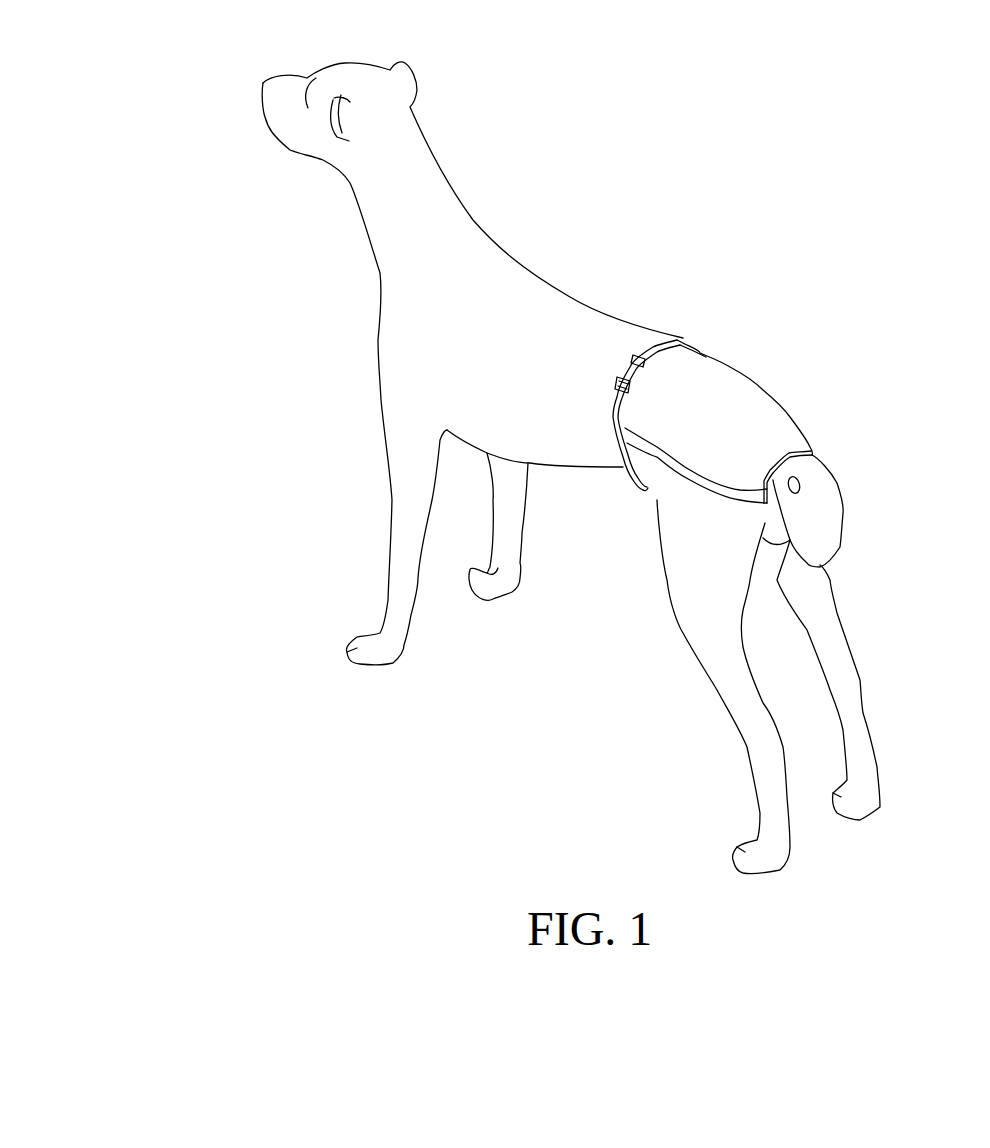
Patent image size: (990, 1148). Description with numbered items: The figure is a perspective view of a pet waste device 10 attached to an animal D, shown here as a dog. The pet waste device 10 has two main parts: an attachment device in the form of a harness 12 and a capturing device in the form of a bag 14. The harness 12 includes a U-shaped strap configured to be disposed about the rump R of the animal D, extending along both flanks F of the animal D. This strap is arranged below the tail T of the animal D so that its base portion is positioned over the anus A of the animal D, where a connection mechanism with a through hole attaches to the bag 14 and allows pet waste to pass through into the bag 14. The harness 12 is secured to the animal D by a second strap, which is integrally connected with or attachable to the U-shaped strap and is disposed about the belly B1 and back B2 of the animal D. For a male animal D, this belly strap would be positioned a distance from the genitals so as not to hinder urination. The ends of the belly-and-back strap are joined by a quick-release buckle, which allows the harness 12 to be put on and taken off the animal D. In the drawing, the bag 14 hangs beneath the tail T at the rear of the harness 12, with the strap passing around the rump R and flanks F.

The pet waste device 10 is at (328, 327).
The harness 12 is at (704, 340).
The bag 14 is at (813, 507).
The animal D is at (567, 227).
The belly B1 is at (598, 457).
The back B2 is at (623, 333).
The flanks F is at (767, 407).
The tail T is at (797, 423).
The rump R is at (808, 438).
The anus A is at (803, 479).